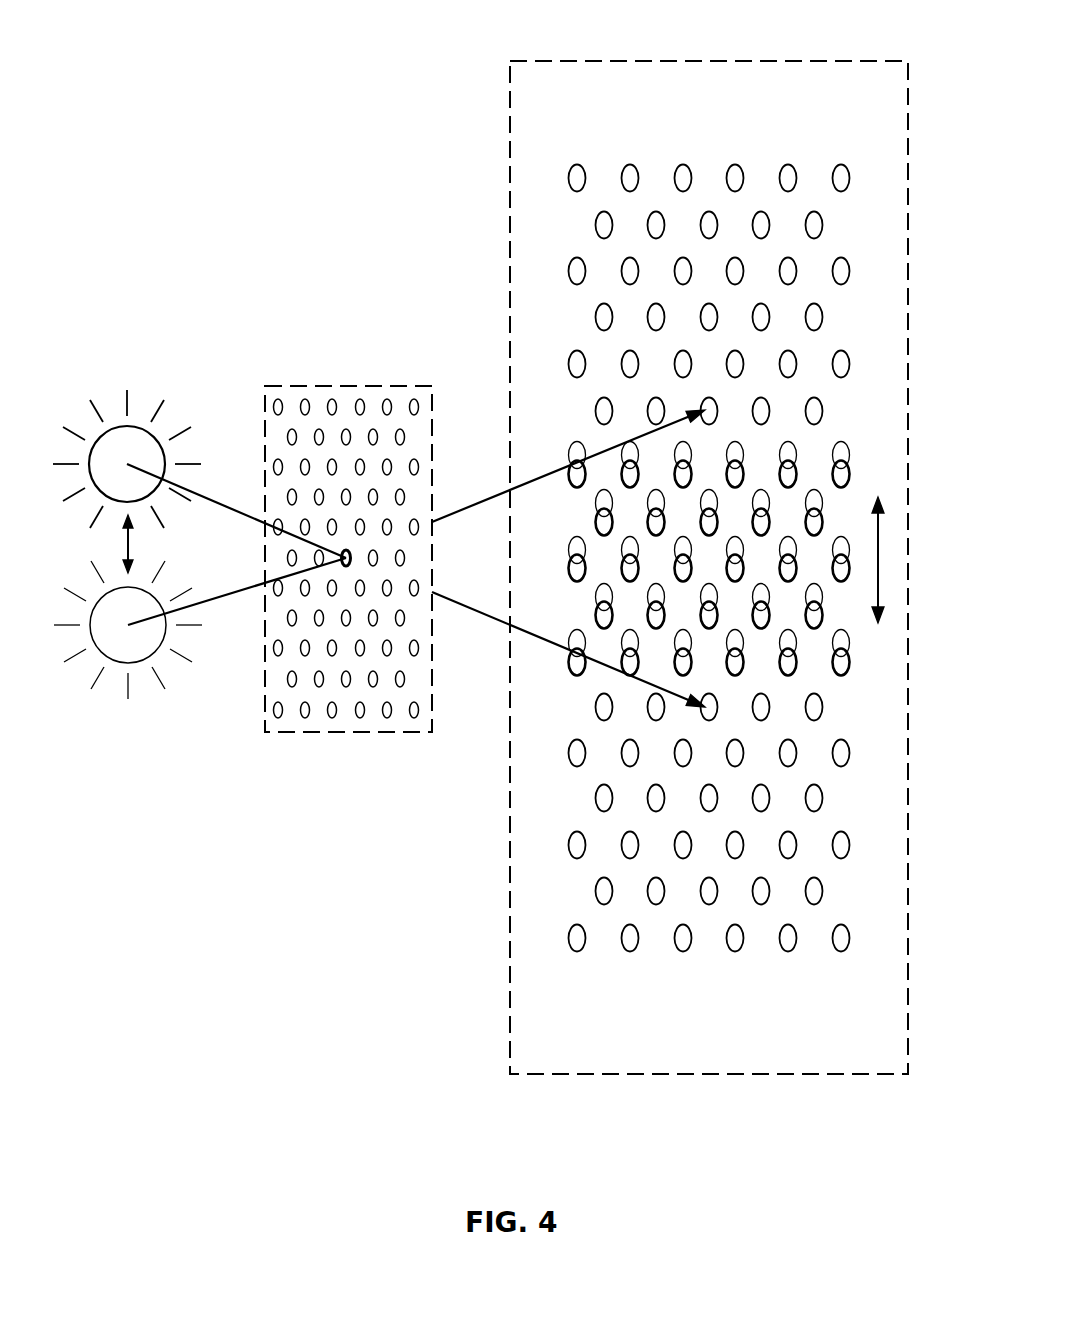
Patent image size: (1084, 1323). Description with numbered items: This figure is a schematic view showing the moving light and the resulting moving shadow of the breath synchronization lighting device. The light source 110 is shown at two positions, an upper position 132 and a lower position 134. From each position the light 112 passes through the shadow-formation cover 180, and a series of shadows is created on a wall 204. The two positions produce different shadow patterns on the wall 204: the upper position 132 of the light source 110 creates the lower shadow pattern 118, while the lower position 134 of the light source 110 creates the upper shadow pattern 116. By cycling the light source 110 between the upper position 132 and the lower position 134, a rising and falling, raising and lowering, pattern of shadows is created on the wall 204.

The wall 204 is at (737, 542).
The upper shadow pattern 116 is at (841, 212).
The lower shadow pattern 118 is at (845, 779).
The shadow-formation cover 180 is at (358, 388).
The light 112 is at (457, 512).
The light source 110 is at (125, 443).
The upper position 132 is at (52, 448).
The lower position 134 is at (52, 648).